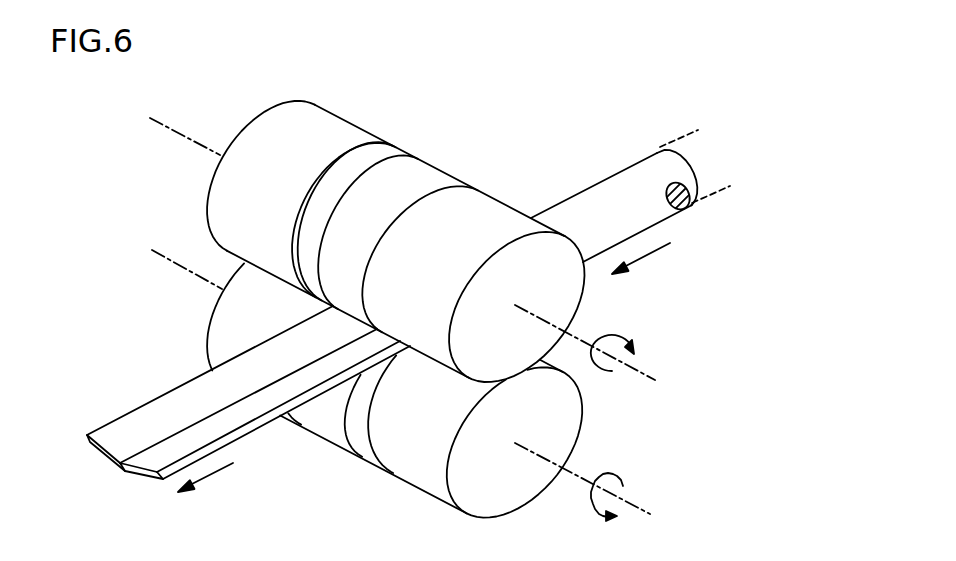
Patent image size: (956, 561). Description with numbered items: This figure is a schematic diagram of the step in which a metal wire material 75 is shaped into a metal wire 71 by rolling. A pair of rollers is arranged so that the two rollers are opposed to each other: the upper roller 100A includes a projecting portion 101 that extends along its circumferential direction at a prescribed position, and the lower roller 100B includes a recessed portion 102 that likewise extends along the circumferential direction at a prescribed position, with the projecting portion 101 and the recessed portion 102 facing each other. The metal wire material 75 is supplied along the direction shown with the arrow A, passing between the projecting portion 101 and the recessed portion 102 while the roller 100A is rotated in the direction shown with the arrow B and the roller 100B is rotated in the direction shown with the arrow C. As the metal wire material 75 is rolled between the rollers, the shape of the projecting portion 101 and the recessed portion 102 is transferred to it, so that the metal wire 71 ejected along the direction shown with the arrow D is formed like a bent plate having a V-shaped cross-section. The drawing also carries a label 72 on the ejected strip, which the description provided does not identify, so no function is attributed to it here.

The roller 100A is at (342, 137).
The projecting portion 101 is at (420, 170).
The roller 100B is at (405, 462).
The recessed portion 102 is at (325, 420).
The metal wire material 75 is at (600, 197).
The tape 72 is at (165, 412).
The metal wire 71 is at (143, 477).
The arrow A is at (655, 252).
The arrow B is at (609, 333).
The arrow C is at (613, 470).
The arrow D is at (215, 477).